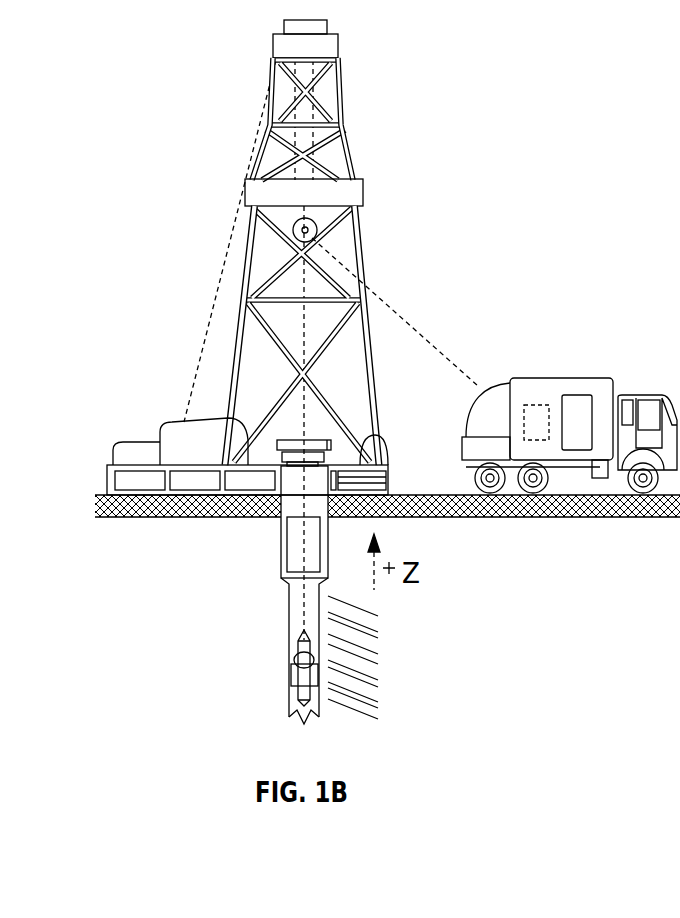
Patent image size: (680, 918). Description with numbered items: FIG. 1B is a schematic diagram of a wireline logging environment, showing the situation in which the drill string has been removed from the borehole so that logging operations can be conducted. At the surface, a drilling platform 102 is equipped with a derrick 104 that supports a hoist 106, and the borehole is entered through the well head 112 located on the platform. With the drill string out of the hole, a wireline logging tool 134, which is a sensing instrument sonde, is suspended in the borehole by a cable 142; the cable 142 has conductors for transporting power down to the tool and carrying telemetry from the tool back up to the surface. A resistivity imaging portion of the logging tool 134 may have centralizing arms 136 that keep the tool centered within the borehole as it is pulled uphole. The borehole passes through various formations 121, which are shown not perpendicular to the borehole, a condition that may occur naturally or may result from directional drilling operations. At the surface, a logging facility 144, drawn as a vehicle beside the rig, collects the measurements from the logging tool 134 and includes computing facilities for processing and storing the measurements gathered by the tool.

The drilling platform 102 is at (392, 490).
The derrick 104 is at (384, 432).
The hoist 106 is at (310, 221).
The well head 112 is at (290, 438).
The formations 121 is at (394, 614).
The wireline logging tool 134 is at (298, 640).
The centralizing arms 136 is at (292, 676).
The cable 142 is at (405, 320).
The logging facility 144 is at (553, 378).